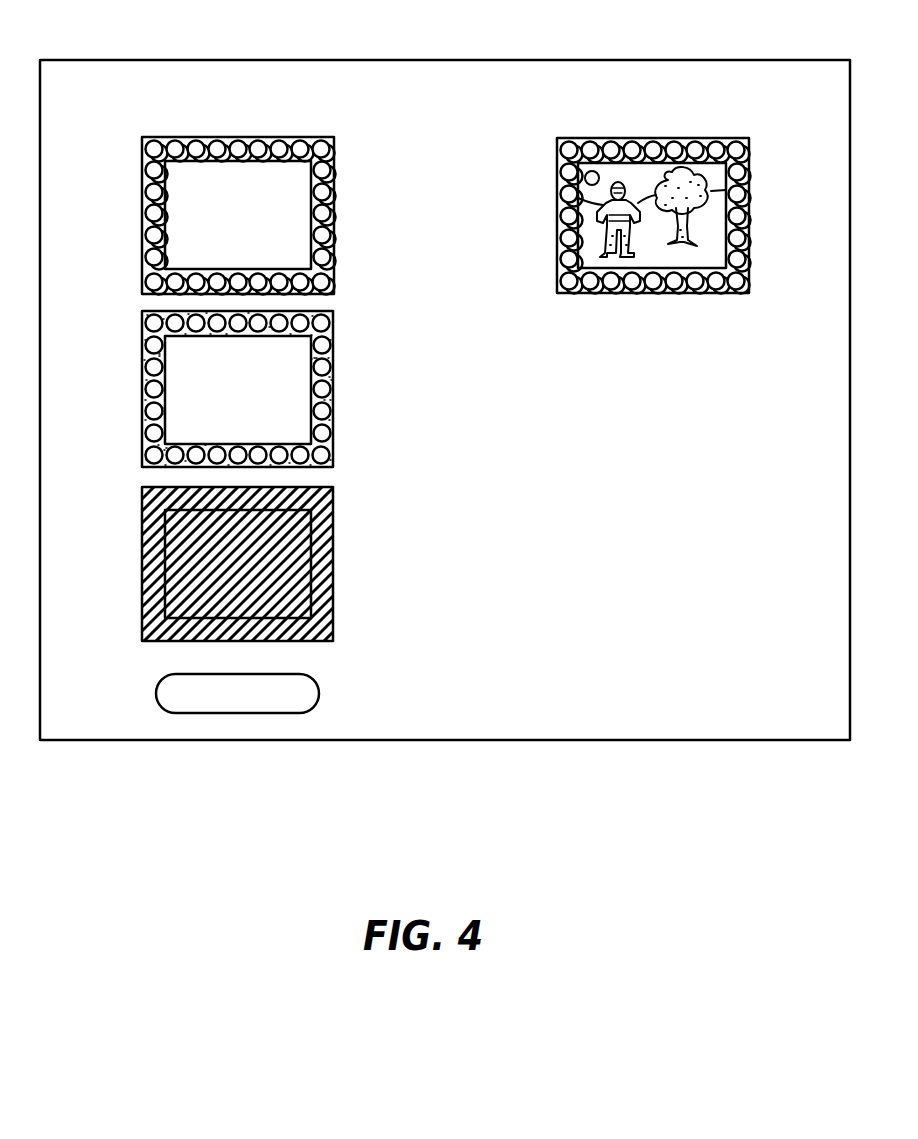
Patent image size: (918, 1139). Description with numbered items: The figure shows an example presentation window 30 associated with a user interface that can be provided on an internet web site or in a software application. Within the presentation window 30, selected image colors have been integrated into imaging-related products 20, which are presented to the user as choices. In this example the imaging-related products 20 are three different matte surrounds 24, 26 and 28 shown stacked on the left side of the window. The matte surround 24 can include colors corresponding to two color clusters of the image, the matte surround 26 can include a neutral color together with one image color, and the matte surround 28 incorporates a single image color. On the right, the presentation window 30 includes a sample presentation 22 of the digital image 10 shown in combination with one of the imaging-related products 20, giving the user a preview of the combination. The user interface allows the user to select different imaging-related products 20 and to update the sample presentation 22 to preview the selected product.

The digital image 10 is at (711, 225).
The imaging-related products 20 is at (408, 263).
The sample presentation 22 is at (759, 131).
The matte surround 24 is at (334, 212).
The matte surround 26 is at (335, 390).
The matte surround 28 is at (335, 565).
The presentation window 30 is at (445, 60).